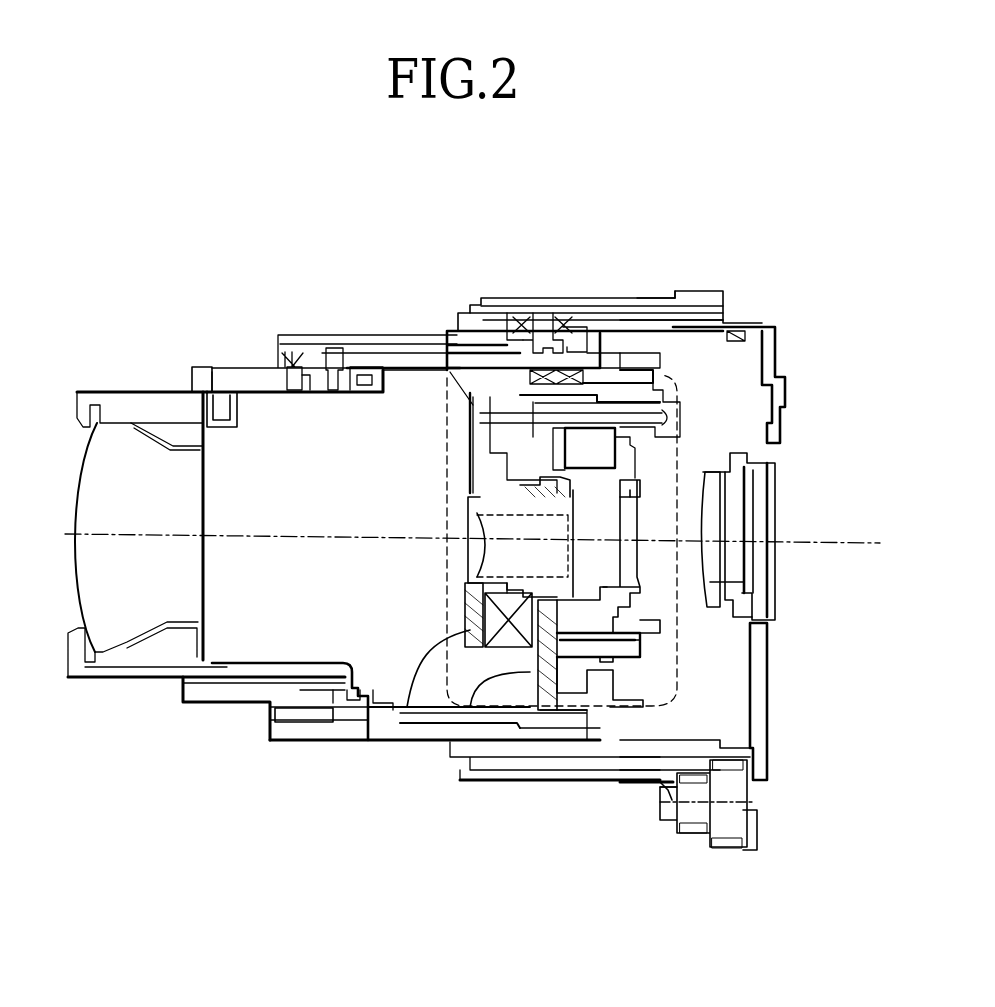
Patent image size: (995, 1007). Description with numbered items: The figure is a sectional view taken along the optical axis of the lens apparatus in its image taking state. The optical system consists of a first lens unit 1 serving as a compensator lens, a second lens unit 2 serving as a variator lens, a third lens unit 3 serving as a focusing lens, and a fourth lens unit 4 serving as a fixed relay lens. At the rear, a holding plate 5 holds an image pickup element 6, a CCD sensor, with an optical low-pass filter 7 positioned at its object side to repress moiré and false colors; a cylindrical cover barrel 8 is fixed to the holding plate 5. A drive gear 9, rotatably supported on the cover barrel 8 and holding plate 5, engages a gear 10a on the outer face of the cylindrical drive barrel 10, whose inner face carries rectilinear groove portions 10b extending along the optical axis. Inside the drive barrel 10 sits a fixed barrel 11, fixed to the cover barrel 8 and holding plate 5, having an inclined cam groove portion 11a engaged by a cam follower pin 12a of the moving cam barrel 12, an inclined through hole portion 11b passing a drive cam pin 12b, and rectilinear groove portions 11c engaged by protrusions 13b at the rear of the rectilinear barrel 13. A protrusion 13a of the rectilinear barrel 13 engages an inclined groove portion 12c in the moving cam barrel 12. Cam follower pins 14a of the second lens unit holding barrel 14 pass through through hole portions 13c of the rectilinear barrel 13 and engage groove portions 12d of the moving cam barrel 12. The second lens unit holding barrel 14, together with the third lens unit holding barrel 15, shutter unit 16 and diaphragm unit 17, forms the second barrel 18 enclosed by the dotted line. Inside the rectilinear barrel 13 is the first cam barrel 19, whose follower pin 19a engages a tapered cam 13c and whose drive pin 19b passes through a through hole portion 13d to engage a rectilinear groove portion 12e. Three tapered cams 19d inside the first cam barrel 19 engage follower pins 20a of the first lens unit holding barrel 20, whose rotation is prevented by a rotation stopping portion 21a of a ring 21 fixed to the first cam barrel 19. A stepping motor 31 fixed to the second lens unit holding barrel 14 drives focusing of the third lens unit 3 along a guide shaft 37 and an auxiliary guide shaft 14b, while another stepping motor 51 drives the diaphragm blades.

The first lens unit 1 is at (93, 582).
The second lens unit 2 is at (753, 690).
The third lens unit 3 is at (625, 560).
The fourth lens unit 4 is at (745, 587).
The holding plate 5 is at (777, 329).
The image pickup element 6 is at (760, 485).
The optical low-pass filter 7 is at (733, 567).
The cover barrel 8 is at (663, 790).
The drive gear 9 is at (757, 823).
The drive barrel 10 is at (595, 757).
The gear 10a is at (670, 790).
The rectilinear groove portions 10b is at (637, 298).
The fixed barrel 11 is at (568, 733).
The cam groove portion 11a is at (503, 298).
The through hole portion 11b is at (590, 298).
The rectilinear groove portions 11c is at (617, 298).
The moving cam barrel 12 is at (422, 757).
The cam follower pin 12a is at (527, 298).
The drive cam pin 12b is at (553, 298).
The groove portion 12c is at (545, 730).
The groove portions 12d is at (545, 723).
The rectilinear groove portion 12e is at (403, 344).
The rectilinear barrel 13 is at (365, 740).
The protrusion 13a is at (560, 723).
The protrusions 13b is at (613, 298).
The through hole portions / tapered cam 13c is at (298, 352).
The through hole portion 13d is at (353, 367).
The second lens unit holding barrel 14 is at (447, 740).
The cam follower pins 14a is at (540, 735).
The auxiliary guide shaft 14b is at (665, 705).
The third lens unit holding barrel 15 is at (622, 610).
The shutter unit 16 is at (403, 740).
The diaphragm unit 17 is at (448, 368).
The second barrel 18 is at (680, 433).
The first cam barrel 19 is at (202, 693).
The follower pin 19a is at (287, 360).
The drive pin 19b is at (328, 348).
The tapered cams 19d is at (214, 390).
The first lens unit holding barrel 20 is at (113, 398).
The follower pins 20a is at (213, 370).
The ring with rotation stopping rod 21 is at (337, 685).
The rotation stopping portion 21a is at (297, 670).
The stepping motor 31 is at (552, 477).
The guide shaft 37 is at (735, 328).
The stepping motor 51 is at (627, 481).